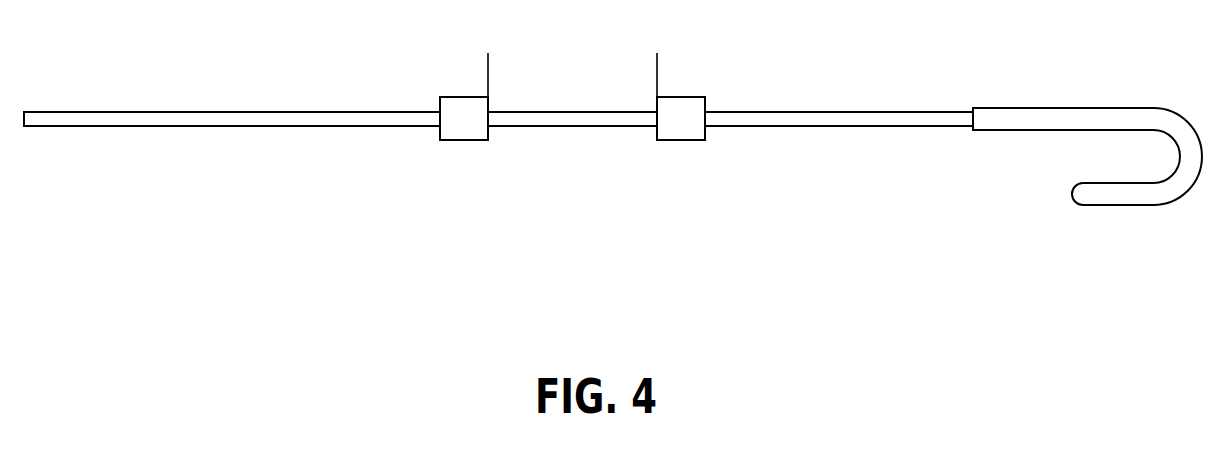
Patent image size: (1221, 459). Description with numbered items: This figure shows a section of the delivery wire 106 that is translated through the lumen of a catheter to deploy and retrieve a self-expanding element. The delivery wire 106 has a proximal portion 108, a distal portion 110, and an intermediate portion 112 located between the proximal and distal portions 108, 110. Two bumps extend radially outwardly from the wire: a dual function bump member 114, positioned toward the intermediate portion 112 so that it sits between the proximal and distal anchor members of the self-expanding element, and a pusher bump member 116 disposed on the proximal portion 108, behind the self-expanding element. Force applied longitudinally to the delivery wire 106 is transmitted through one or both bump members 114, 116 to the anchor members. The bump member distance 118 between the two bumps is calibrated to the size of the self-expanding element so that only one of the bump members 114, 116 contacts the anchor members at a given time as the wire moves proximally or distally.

The delivery wire 106 is at (43, 120).
The proximal portion 108 is at (383, 118).
The distal portion 110 is at (832, 118).
The intermediate portion 112 is at (618, 118).
The dual function bump member 114 is at (680, 158).
The pusher bump member 116 is at (463, 158).
The bump member distance 118 is at (646, 73).